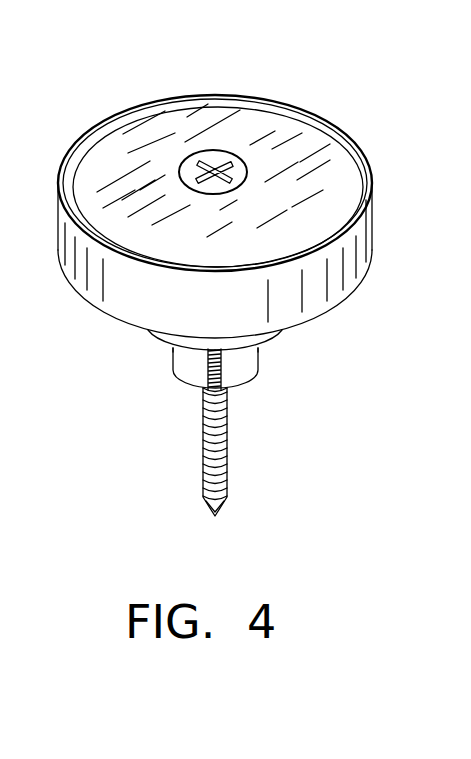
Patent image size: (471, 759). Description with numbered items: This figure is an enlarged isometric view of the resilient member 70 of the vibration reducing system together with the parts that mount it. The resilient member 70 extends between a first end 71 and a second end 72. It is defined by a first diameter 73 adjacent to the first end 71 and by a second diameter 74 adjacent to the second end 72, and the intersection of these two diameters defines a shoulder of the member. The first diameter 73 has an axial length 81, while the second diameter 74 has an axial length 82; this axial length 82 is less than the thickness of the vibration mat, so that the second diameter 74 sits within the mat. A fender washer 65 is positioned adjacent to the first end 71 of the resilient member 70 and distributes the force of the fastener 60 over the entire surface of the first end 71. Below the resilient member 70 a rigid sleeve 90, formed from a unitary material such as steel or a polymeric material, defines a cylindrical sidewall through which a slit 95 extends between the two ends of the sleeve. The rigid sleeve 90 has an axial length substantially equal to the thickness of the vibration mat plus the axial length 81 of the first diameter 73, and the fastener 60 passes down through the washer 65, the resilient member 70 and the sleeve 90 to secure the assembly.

The fastener 60 is at (228, 457).
The fender washer 65 is at (250, 117).
The resilient member 70 is at (83, 284).
The first end 71 is at (354, 142).
The second end 72 is at (150, 330).
The first diameter 73 is at (372, 217).
The second diameter 74 is at (279, 331).
The axial length 81 is at (336, 283).
The axial length 82 is at (172, 347).
The rigid sleeve 90 is at (247, 365).
The slit 95 is at (213, 396).